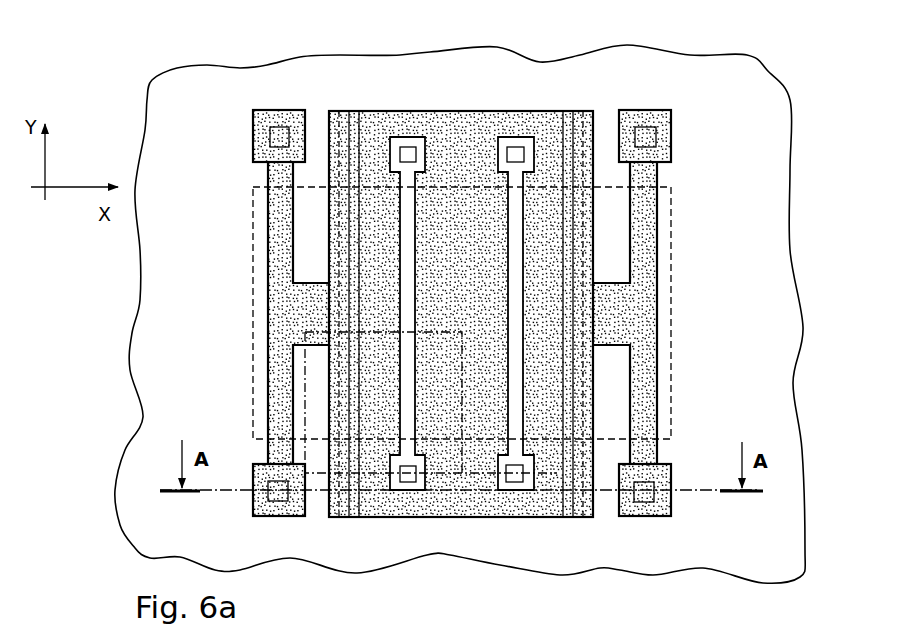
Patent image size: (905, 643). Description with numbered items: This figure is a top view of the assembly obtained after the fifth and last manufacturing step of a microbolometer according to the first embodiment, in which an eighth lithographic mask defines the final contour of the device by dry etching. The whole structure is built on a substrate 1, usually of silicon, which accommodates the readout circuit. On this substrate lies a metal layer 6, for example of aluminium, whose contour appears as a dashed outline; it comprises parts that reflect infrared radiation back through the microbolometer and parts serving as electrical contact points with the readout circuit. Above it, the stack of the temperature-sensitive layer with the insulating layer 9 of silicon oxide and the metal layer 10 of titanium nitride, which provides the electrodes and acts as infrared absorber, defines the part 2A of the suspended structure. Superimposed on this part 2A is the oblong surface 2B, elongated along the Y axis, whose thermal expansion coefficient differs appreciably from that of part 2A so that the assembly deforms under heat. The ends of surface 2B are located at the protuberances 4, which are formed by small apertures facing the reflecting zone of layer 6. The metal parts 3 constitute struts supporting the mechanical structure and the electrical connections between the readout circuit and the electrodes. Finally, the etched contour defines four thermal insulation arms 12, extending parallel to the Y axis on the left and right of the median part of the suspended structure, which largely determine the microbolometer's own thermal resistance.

The substrate 1 is at (183, 339).
The part of the suspended part 2A is at (444, 134).
The oblong surface 2B is at (396, 185).
The parts associated with second apertures 3 is at (641, 462).
The protuberances 4 is at (523, 462).
The metal layer 6 is at (312, 437).
The electrical insulating layer 9 is at (338, 302).
The metal electrode layer 10 is at (352, 201).
The thermal insulation arms 12 is at (644, 252).